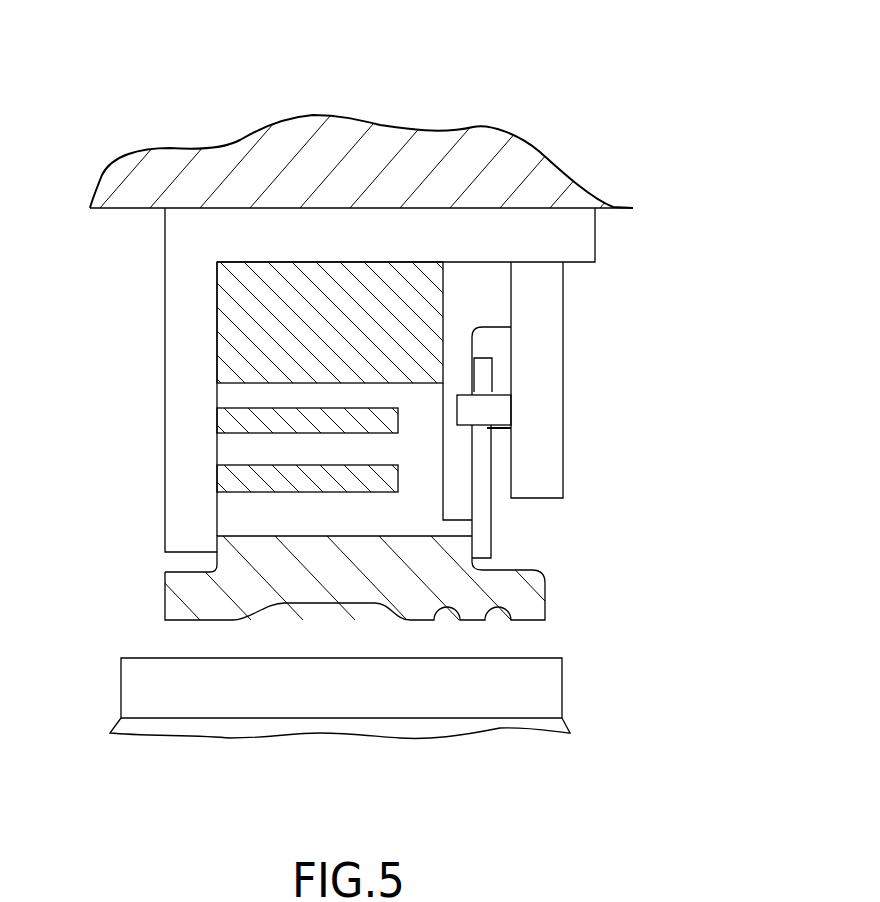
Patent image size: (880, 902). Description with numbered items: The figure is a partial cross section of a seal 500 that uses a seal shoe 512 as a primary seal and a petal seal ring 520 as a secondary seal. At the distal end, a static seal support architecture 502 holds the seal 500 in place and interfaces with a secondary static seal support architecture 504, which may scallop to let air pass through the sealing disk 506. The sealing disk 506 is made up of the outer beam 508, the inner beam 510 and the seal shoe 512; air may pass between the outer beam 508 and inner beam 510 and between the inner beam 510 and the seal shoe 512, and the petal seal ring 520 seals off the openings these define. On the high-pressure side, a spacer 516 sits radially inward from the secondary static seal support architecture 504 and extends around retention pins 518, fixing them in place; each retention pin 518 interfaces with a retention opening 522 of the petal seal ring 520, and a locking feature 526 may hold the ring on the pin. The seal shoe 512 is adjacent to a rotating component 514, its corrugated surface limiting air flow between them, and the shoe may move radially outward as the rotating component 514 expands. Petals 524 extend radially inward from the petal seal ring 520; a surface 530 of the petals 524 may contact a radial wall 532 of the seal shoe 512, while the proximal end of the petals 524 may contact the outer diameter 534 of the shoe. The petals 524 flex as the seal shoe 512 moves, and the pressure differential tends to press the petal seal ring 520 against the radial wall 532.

The seal 500 is at (168, 82).
The static seal support architecture 502 is at (495, 143).
The secondary static seal support architecture 504 is at (580, 236).
The sealing disk 506 is at (237, 332).
The outer beam 508 is at (232, 422).
The inner beam 510 is at (234, 474).
The seal shoe 512 is at (170, 590).
The rotating component 514 is at (292, 703).
The spacer 516 is at (493, 302).
The retention pin 518 is at (497, 413).
The petal seal ring 520 is at (485, 508).
The retention opening 522 is at (487, 428).
The petals 524 is at (492, 558).
The locking feature 526 is at (550, 346).
The surface of petals 530 is at (473, 528).
The radial wall 532 is at (470, 548).
The outer diameter 534 is at (523, 575).